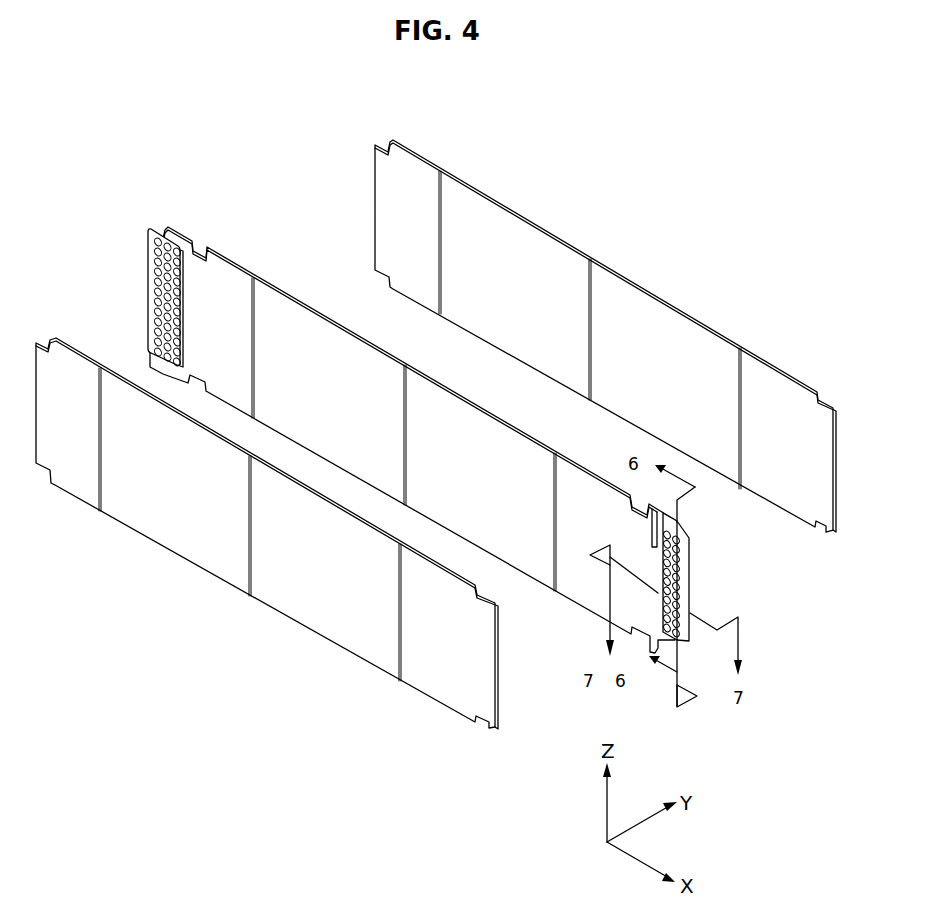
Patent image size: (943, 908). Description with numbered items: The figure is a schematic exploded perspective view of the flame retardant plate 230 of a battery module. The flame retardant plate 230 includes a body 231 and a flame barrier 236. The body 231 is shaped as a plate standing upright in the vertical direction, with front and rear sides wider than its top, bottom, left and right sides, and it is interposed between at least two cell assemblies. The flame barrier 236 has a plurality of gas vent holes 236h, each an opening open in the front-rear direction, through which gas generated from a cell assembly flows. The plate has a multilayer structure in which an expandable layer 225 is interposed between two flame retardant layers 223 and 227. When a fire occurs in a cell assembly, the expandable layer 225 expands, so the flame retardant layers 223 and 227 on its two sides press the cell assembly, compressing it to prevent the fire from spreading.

The flame retardant layer 223 is at (76, 351).
The expandable layer 225 is at (236, 253).
The flame retardant layer 227 is at (416, 153).
The flame retardant plate 230 is at (666, 197).
The body 231 is at (298, 303).
The flame barrier 236 is at (148, 257).
The gas vent hole 236h is at (157, 240).